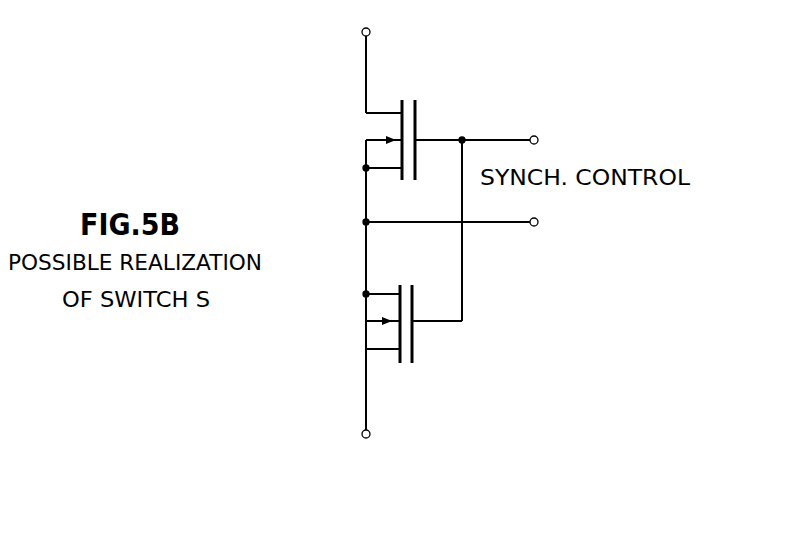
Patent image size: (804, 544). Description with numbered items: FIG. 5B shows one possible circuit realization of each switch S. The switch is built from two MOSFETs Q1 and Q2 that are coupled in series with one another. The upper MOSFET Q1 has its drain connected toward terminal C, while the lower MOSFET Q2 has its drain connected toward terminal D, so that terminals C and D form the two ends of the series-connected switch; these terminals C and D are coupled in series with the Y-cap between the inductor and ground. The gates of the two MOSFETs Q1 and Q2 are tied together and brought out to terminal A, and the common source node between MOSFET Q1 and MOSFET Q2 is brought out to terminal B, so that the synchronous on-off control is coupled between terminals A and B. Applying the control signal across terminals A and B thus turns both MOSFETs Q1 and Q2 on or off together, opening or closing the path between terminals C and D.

The MOSFET Q1 is at (372, 129).
The MOSFET Q2 is at (377, 333).
The terminal A is at (489, 142).
The terminal B is at (462, 224).
The terminal C is at (379, 67).
The terminal D is at (379, 398).